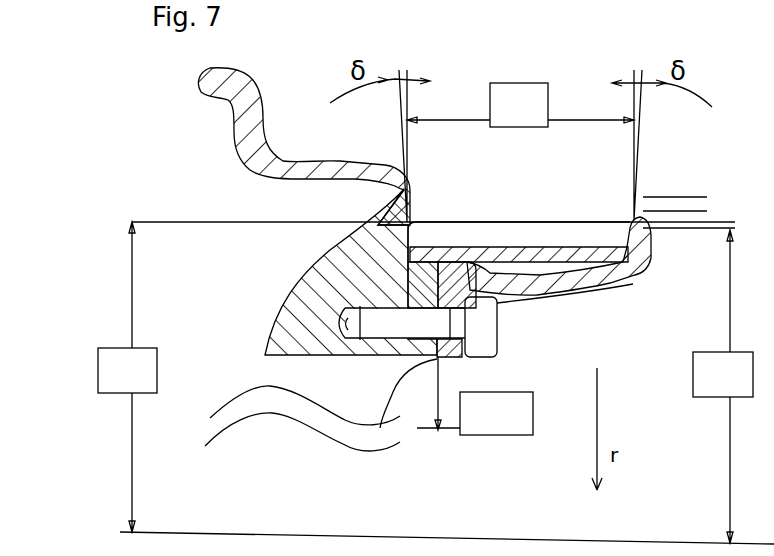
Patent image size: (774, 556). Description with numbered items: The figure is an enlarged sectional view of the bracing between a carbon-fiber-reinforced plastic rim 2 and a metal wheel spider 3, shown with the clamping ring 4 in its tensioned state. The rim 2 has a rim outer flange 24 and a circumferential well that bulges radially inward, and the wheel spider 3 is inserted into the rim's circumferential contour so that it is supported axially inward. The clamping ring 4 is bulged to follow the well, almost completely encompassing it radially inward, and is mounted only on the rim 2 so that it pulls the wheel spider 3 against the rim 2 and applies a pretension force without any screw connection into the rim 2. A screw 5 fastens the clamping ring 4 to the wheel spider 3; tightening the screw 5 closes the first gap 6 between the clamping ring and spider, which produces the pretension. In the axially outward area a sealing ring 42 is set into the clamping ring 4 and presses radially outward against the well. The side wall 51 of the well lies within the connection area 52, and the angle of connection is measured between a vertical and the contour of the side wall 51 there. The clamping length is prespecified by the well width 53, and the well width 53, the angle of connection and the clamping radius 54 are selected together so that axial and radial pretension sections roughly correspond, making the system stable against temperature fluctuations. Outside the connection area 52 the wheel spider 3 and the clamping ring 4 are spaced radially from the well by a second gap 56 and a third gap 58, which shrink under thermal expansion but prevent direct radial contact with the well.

The rim 2 is at (673, 207).
The wheel spider 3 is at (268, 345).
The clamping ring 4 is at (444, 232).
The screw 5 is at (372, 326).
The first gap 6 is at (475, 396).
The rim outer flange 24 is at (230, 103).
The sealing ring 42 is at (459, 263).
The side wall 51 is at (405, 219).
The connection area 52 is at (426, 227).
The well width 53 is at (520, 105).
The clamping radius 54 is at (626, 232).
The second gap 56 is at (462, 263).
The third gap 58 is at (419, 262).